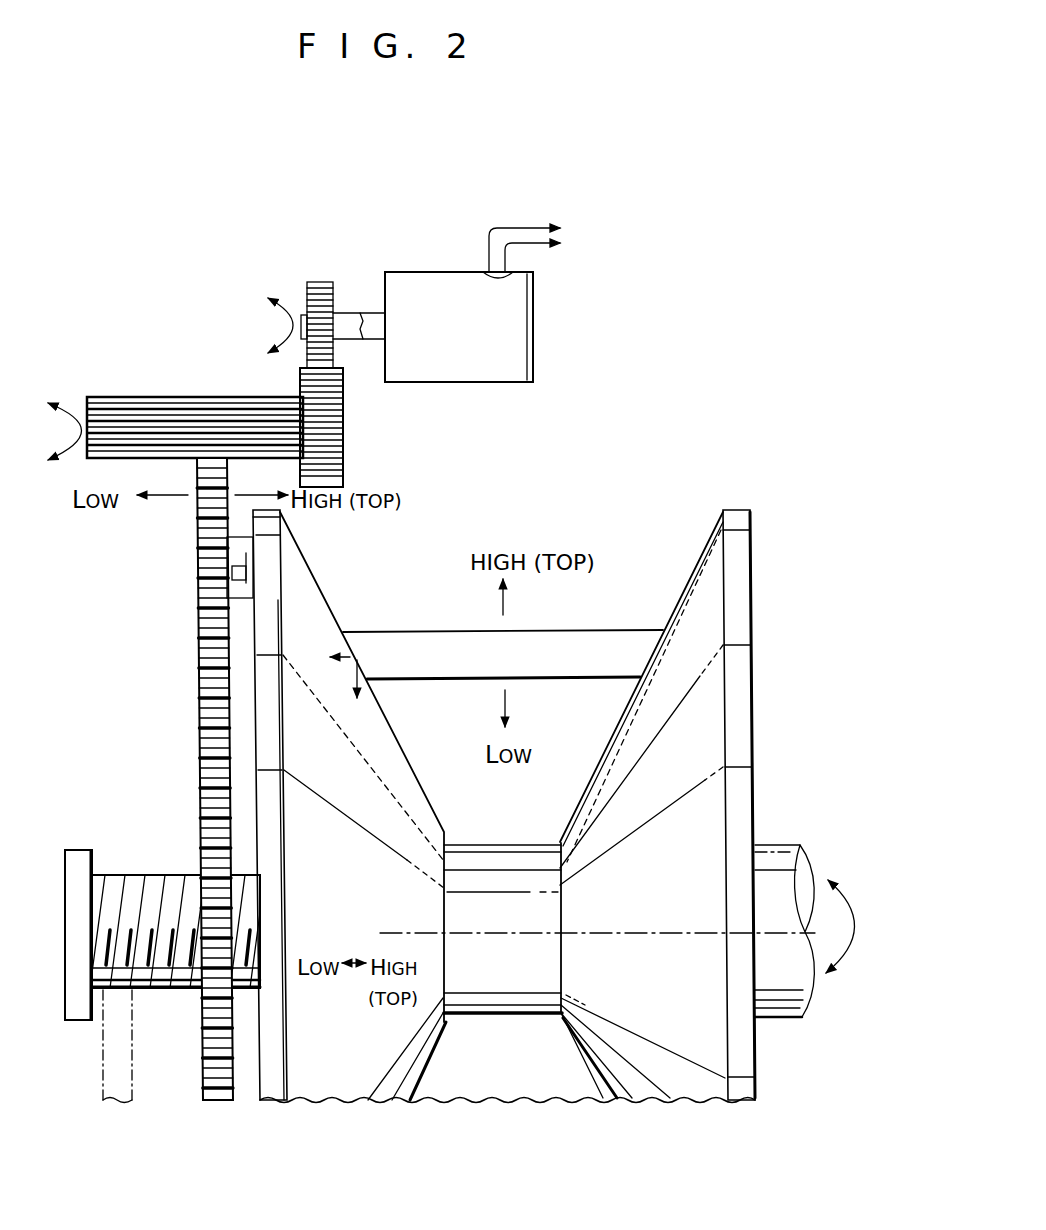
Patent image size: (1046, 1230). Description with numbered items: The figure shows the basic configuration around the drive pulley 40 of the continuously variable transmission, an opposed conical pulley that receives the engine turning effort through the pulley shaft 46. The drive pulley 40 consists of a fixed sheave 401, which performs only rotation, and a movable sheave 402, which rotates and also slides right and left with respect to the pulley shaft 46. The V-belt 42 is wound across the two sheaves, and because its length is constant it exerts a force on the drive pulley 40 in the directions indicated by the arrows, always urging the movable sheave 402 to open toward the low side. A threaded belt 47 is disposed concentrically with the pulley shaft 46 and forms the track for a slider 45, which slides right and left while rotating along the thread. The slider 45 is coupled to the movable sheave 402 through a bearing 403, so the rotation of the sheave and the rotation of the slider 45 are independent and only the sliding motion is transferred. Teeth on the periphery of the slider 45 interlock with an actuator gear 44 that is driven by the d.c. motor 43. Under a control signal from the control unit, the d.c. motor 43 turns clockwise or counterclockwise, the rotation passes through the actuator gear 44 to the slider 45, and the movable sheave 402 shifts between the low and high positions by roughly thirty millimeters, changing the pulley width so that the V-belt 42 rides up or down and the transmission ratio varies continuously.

The drive pulley 40 is at (532, 535).
The V-belt 42 is at (573, 632).
The d.c. motor 43 is at (416, 270).
The actuator gear 44 is at (140, 397).
The slider 45 is at (197, 687).
The pulley shaft 46 is at (781, 843).
The threaded belt 47 is at (127, 874).
The fixed sheave 401 is at (702, 557).
The movable sheave 402 is at (318, 566).
The bearing 403 is at (228, 563).